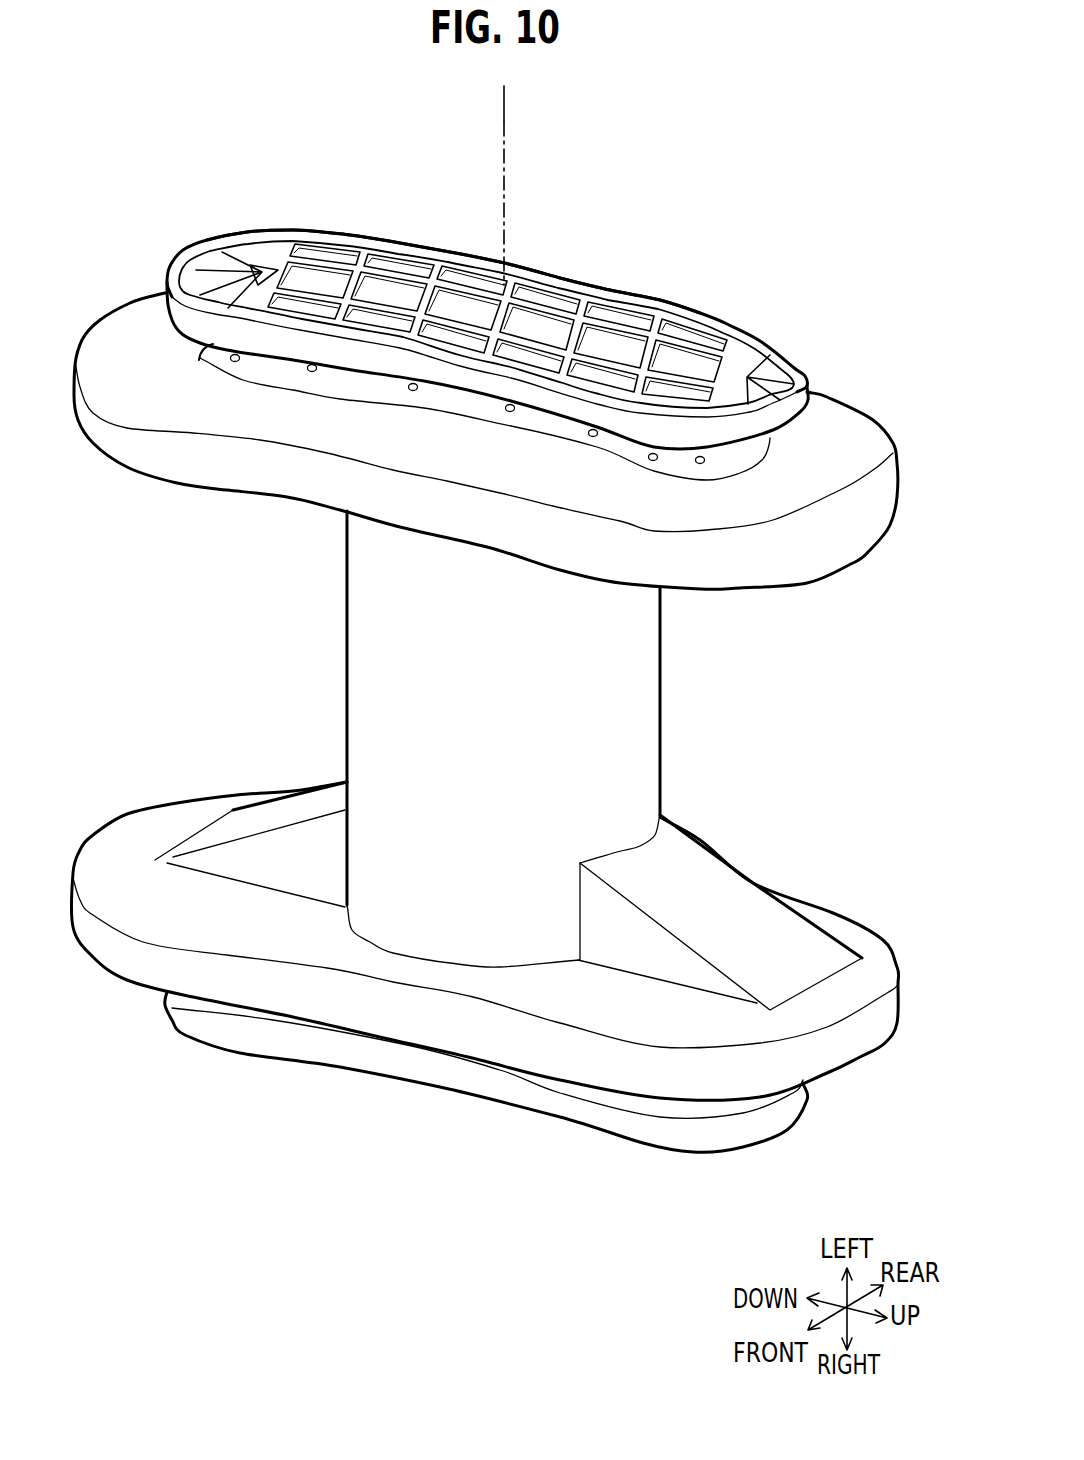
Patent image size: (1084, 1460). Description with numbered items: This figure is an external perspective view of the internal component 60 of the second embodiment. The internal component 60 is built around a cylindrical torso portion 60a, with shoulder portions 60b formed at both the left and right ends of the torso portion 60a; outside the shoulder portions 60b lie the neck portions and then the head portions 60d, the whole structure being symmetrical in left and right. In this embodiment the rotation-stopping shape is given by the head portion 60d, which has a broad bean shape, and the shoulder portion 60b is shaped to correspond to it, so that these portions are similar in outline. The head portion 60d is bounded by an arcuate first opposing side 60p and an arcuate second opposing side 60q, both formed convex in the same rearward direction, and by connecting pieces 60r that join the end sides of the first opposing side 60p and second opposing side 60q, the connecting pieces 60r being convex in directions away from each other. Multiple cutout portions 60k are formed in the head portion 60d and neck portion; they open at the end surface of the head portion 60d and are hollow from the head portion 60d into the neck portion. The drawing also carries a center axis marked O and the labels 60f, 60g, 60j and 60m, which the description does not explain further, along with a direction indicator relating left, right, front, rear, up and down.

The internal component 60 is at (503, 616).
The axis O is at (504, 122).
The torso portion 60a is at (653, 725).
The shoulder portion 60b is at (877, 513).
The head portion 60d is at (173, 293).
The outer peripheral surface 60f is at (850, 427).
The upper surface of lower flange 60g is at (155, 830).
The raised boss portion 60j is at (197, 358).
The cutout portion 60k is at (290, 262).
The holes 60m is at (309, 369).
The first opposing side 60p is at (363, 352).
The second opposing side 60q is at (533, 265).
The connecting piece 60r is at (177, 263).